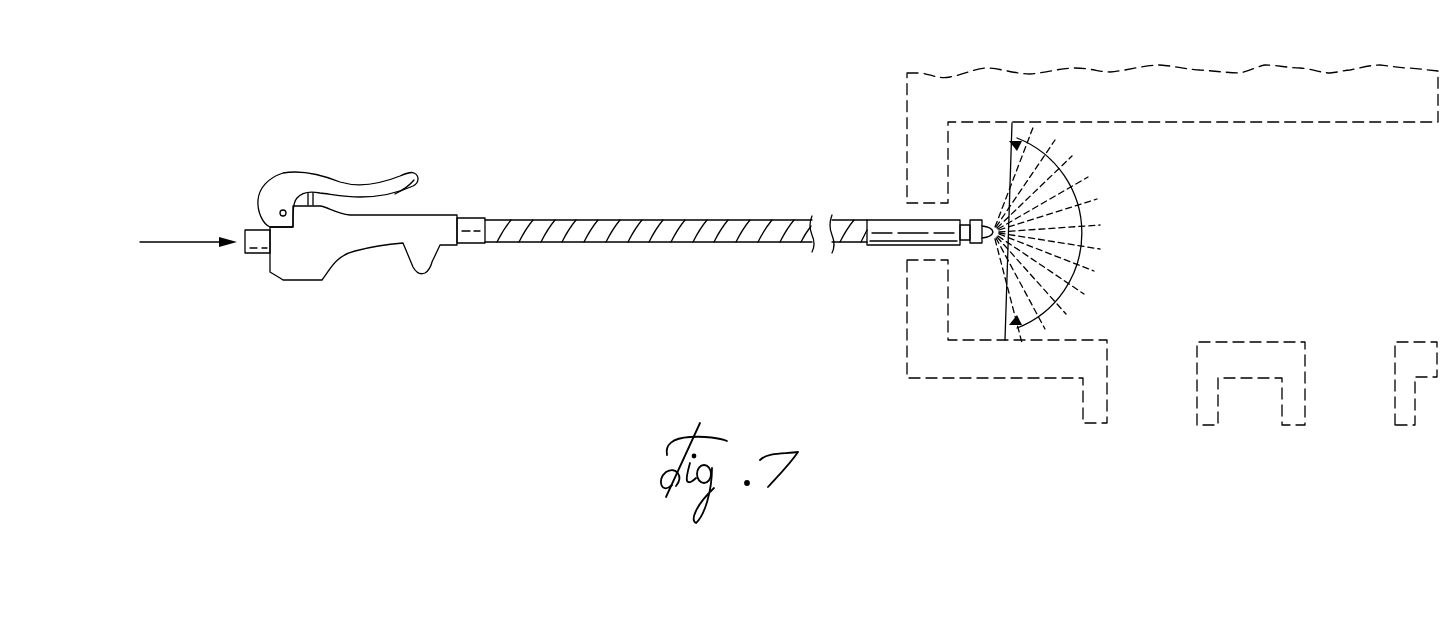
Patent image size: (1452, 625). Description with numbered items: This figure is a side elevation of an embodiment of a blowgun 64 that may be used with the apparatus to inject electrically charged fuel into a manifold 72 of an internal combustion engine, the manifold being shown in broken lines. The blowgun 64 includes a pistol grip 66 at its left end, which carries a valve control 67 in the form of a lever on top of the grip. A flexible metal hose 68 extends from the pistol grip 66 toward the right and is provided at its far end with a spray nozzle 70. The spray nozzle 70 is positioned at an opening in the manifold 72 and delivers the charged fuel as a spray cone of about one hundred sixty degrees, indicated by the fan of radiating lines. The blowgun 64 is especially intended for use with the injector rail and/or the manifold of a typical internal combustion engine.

The blowgun 64 is at (554, 128).
The pistol grip 66 is at (346, 177).
The valve control 67 is at (407, 170).
The flexible metal hose 68 is at (799, 245).
The spray nozzle 70 is at (973, 245).
The manifold 72 is at (1003, 380).